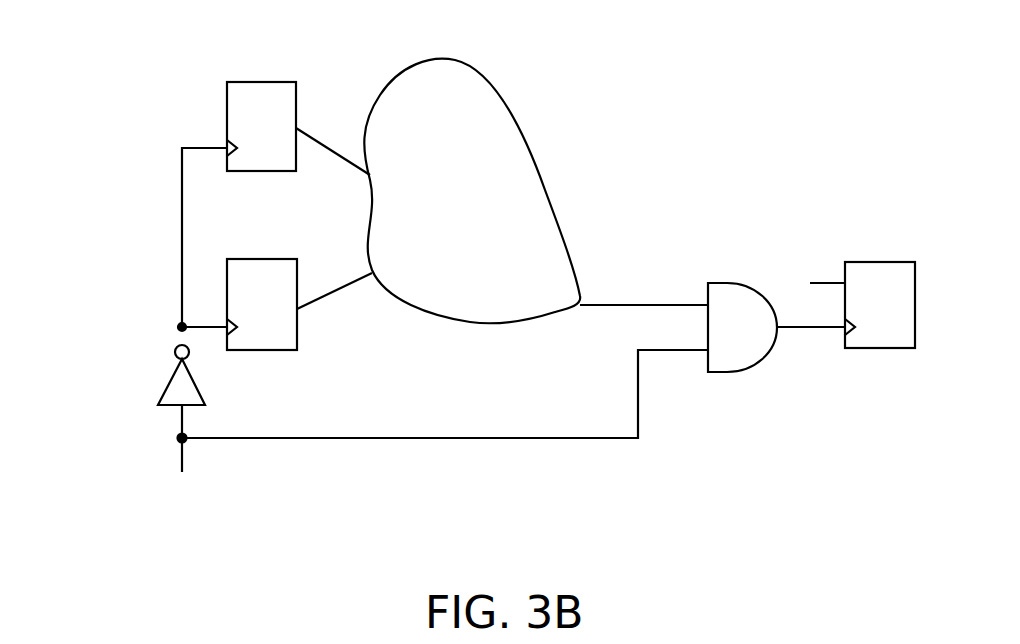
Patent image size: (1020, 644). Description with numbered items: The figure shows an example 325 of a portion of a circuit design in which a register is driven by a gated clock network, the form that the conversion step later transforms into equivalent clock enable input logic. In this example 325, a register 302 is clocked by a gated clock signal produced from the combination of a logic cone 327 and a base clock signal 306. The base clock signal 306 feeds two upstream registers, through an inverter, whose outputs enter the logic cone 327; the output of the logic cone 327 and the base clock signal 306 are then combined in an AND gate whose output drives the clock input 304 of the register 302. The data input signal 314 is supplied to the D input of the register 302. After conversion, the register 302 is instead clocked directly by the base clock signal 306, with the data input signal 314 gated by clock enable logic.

The logic cone 327 is at (472, 191).
The example gated clock network 325 is at (445, 427).
The base clock signal 306 is at (160, 454).
The register 302 is at (880, 305).
The data input signal 314 is at (809, 267).
The clock input 304 is at (843, 331).